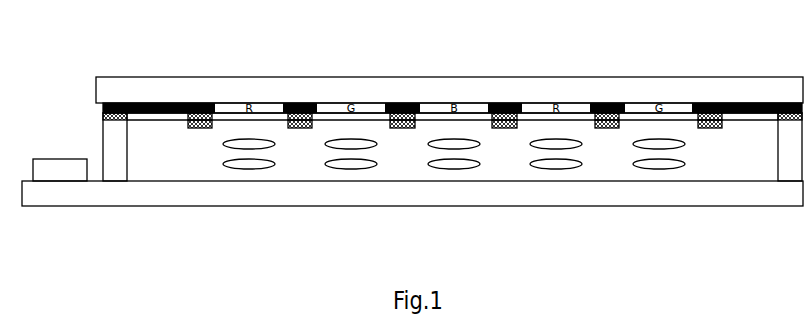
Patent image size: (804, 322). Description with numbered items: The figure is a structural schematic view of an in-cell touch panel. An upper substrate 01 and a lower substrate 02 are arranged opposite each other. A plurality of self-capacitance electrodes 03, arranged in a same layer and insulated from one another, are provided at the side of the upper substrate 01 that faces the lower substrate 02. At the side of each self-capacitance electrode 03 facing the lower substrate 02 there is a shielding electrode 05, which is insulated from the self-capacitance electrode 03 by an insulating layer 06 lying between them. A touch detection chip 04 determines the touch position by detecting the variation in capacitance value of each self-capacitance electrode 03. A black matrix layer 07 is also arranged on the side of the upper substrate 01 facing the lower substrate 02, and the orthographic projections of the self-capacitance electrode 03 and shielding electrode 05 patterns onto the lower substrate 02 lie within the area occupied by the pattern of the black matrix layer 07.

The upper substrate 01 is at (166, 85).
The lower substrate 02 is at (220, 196).
The self-capacitance electrode 03 is at (313, 121).
The touch detection chip 04 is at (57, 172).
The shielding electrode 05 is at (504, 124).
The insulating layer 06 is at (673, 120).
The black matrix layer 07 is at (397, 106).